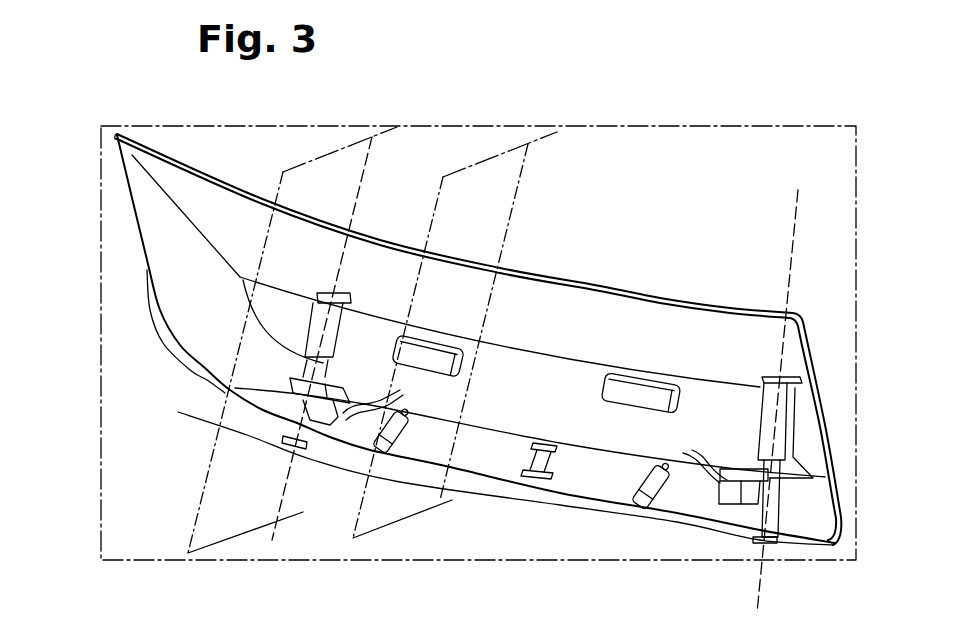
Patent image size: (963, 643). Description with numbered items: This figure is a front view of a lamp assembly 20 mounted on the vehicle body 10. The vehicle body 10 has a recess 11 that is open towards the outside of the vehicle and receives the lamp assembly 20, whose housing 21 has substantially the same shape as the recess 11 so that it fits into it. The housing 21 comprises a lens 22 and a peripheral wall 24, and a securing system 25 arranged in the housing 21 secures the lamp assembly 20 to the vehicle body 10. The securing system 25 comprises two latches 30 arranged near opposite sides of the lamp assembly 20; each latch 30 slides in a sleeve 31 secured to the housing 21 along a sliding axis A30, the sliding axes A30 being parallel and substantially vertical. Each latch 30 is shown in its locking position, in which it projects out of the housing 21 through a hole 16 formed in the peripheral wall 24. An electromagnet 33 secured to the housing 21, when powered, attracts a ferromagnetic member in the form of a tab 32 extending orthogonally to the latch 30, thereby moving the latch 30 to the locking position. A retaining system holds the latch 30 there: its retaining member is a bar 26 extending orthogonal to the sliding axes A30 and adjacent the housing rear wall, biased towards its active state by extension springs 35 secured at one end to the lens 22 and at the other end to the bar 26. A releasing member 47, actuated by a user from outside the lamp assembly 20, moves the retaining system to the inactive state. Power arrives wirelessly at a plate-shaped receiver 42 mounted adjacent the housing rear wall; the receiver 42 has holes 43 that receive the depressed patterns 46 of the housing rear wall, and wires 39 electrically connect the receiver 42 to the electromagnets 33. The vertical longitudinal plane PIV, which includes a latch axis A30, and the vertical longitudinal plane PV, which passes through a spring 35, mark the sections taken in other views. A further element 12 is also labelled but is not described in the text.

The vehicle body 10 is at (721, 195).
The recess 11 is at (165, 347).
The fastening tab 12 is at (283, 443).
The hole 16 is at (235, 389).
The lamp assembly 20 is at (152, 451).
The housing 21 is at (259, 166).
The lens 22 is at (173, 184).
The peripheral wall 24 is at (140, 247).
The securing system 25 is at (808, 447).
The bar 26 is at (477, 432).
The latch 30 is at (293, 376).
The sleeve 31 is at (317, 331).
The tab 32 is at (386, 318).
The electromagnet 33 is at (342, 422).
The spring 35 is at (412, 447).
The wires 39 is at (360, 425).
The receiver 42 is at (552, 390).
The holes 43 is at (497, 347).
The patterns 46 is at (432, 357).
The releasing member 47 is at (572, 473).
The sliding axis A30 is at (384, 168).
The vertical longitudinal plane PIV is at (203, 532).
The vertical longitudinal plane PV is at (378, 528).